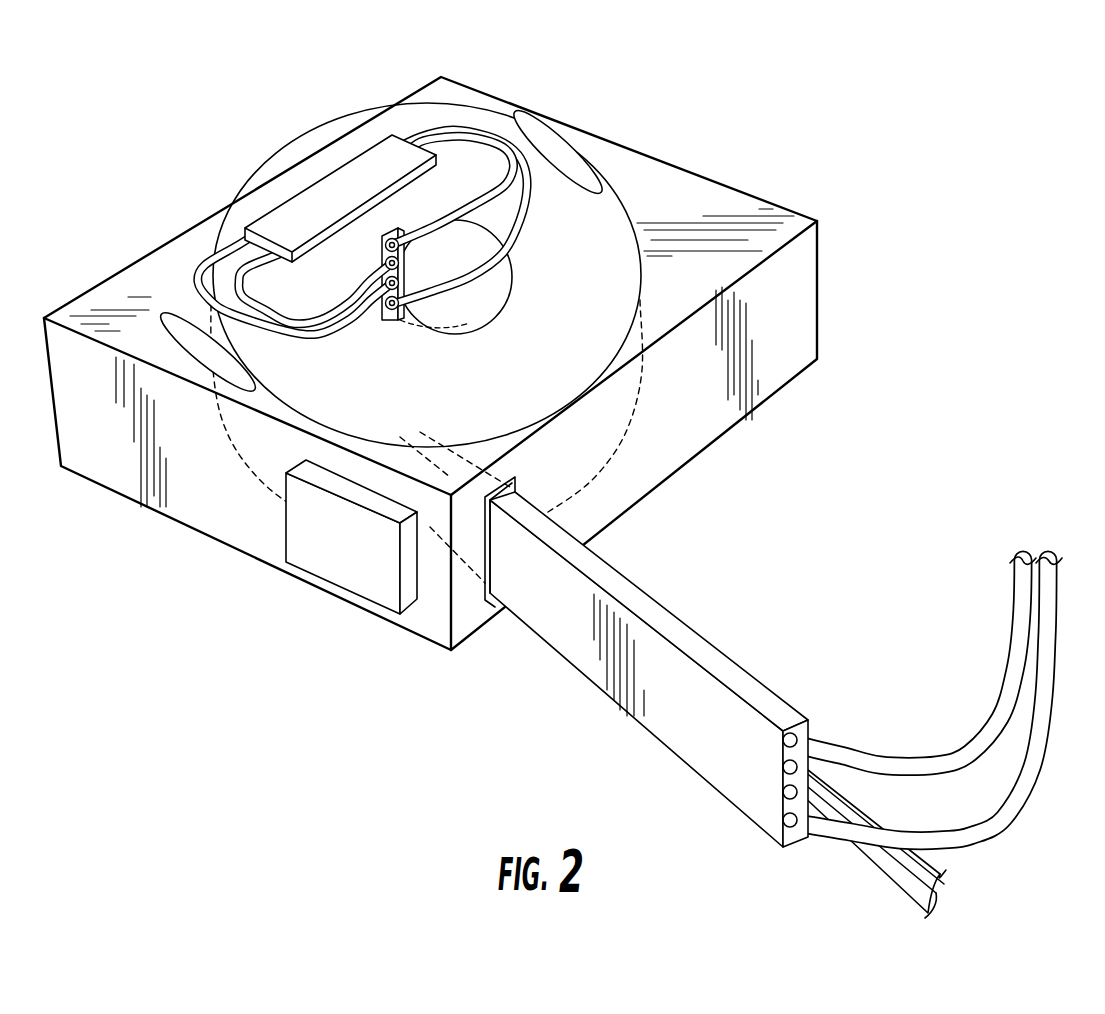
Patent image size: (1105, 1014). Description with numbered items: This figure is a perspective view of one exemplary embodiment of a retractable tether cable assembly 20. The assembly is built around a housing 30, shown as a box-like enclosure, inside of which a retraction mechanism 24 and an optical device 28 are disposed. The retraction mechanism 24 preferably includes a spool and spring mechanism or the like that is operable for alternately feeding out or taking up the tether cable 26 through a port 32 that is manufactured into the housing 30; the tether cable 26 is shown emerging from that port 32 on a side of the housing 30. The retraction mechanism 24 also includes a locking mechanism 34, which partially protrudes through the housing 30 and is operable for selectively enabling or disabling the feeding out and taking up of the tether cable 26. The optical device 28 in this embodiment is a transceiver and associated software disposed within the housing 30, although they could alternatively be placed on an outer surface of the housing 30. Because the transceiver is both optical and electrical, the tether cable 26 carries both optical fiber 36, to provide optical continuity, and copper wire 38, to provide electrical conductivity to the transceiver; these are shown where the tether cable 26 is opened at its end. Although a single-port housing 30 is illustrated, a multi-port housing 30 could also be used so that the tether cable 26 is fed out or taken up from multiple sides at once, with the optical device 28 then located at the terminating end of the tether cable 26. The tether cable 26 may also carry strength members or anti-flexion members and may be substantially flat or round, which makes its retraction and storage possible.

The retractable tether cable assembly 20 is at (788, 104).
The retraction mechanism 24 is at (612, 210).
The tether cable 26 is at (700, 632).
The optical device 28 is at (357, 155).
The housing 30 is at (538, 110).
The port 32 is at (484, 613).
The locking mechanism 34 is at (348, 592).
The optical fiber 36 is at (216, 248).
The copper wire 38 is at (488, 120).